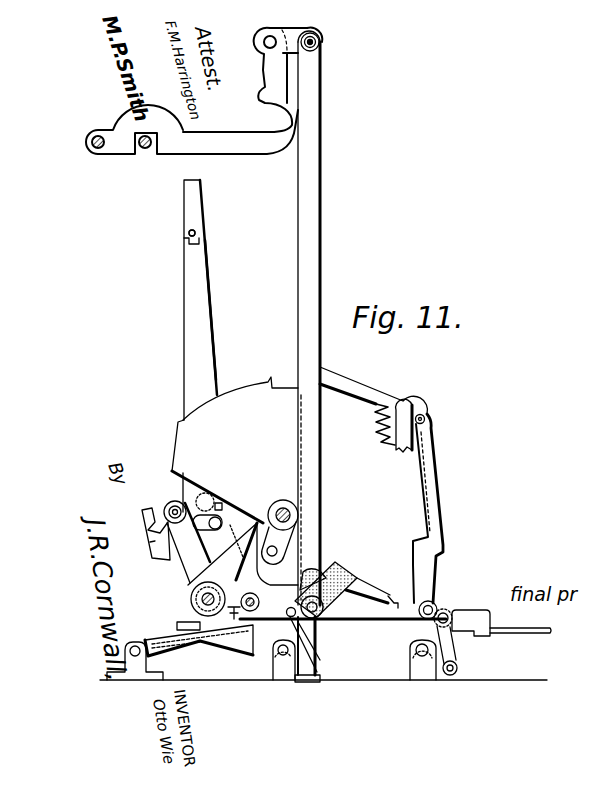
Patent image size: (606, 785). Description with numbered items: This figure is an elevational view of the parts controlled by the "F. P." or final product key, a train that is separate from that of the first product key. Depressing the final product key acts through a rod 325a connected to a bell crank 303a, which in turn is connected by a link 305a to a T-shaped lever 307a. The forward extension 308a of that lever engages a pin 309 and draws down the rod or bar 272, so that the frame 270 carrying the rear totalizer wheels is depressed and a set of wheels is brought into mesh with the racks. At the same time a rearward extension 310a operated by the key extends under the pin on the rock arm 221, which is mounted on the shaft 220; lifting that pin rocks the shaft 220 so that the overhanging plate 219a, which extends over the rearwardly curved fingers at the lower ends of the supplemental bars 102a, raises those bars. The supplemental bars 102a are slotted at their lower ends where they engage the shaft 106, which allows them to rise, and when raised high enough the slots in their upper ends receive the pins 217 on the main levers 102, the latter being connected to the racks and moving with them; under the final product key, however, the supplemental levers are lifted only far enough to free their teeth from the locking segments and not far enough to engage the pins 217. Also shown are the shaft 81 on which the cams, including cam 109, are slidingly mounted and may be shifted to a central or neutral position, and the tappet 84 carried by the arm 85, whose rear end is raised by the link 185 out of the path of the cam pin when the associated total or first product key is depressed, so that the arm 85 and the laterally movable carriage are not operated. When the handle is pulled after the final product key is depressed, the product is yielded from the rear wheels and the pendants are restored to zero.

The frame 270 is at (204, 91).
The rod 272 is at (321, 222).
The main lever 102 is at (203, 206).
The supplemental bar 102a is at (212, 302).
The pin 217 is at (187, 236).
The cam 109 is at (275, 371).
The shaft 81 is at (292, 515).
The tappet 84 is at (370, 390).
The arm 85 is at (399, 442).
The link 185 is at (430, 491).
The shaft 106 is at (190, 588).
The overhanging plate 219a is at (193, 596).
The shaft 220 is at (158, 622).
The rock arm 221 is at (180, 650).
The link 305a is at (356, 611).
The T-shaped lever 307a is at (323, 628).
The rearward extension 310a is at (268, 657).
The pin 309 is at (308, 670).
The forward extension 308a is at (311, 645).
The bell crank 303a is at (418, 628).
The rod 325a is at (516, 637).